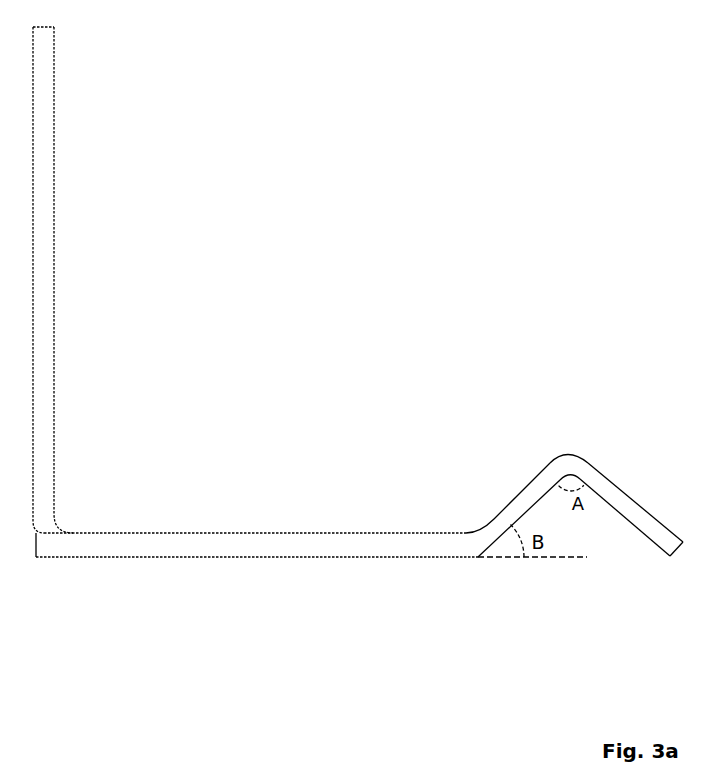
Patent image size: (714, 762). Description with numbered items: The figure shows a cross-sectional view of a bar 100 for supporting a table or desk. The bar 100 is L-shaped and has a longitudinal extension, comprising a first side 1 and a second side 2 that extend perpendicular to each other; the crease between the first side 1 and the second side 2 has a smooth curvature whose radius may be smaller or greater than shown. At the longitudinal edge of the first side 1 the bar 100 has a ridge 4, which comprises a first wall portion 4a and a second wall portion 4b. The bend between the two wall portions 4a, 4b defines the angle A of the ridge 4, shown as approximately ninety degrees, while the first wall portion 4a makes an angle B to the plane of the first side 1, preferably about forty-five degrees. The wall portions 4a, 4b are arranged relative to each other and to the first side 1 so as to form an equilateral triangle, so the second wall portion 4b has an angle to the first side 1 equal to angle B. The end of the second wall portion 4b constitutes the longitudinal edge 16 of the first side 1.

The bar 100 is at (384, 130).
The second side 2 is at (55, 222).
The first side 1 is at (223, 532).
The ridge 4 is at (575, 453).
The first wall portion 4a is at (507, 502).
The second wall portion 4b is at (630, 485).
The longitudinal edge 16 is at (677, 548).